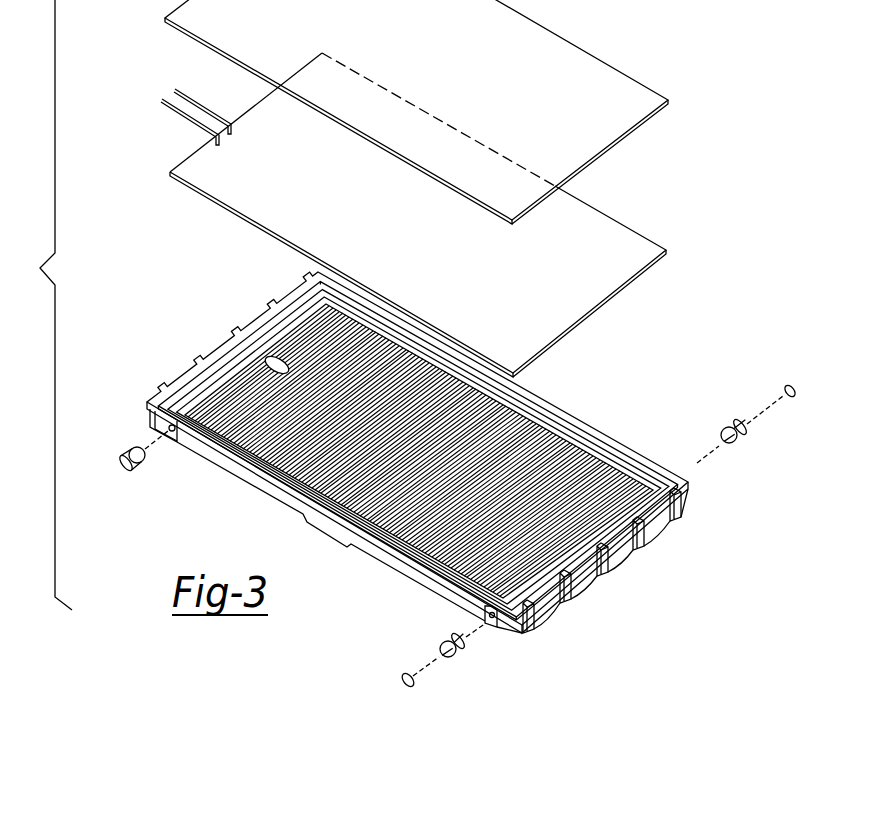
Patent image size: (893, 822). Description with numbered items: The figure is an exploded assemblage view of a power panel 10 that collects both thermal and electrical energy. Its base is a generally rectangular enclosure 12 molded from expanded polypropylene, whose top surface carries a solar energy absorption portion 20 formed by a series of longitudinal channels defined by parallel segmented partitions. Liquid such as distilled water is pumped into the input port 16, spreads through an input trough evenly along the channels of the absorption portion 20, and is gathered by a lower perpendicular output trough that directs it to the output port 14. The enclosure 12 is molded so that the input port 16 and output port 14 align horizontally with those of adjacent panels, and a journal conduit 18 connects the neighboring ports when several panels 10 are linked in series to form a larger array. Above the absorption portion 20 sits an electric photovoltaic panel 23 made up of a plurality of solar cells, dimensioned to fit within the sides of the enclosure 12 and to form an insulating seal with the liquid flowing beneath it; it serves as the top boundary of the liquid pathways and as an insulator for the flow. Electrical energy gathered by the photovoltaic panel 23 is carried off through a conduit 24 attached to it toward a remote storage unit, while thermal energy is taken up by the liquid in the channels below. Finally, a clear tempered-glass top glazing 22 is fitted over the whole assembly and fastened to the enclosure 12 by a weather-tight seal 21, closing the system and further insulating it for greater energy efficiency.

The power panel 10 is at (735, 151).
The enclosure 12 is at (346, 533).
The output port 14 is at (492, 622).
The input port 16 is at (173, 435).
The journal conduit 18 is at (126, 452).
The solar energy absorption portion 20 is at (600, 462).
The weather-tight seal 21 is at (228, 358).
The top glazing 22 is at (644, 100).
The electric photovoltaic panel 23 is at (642, 247).
The conduit 24 is at (163, 99).